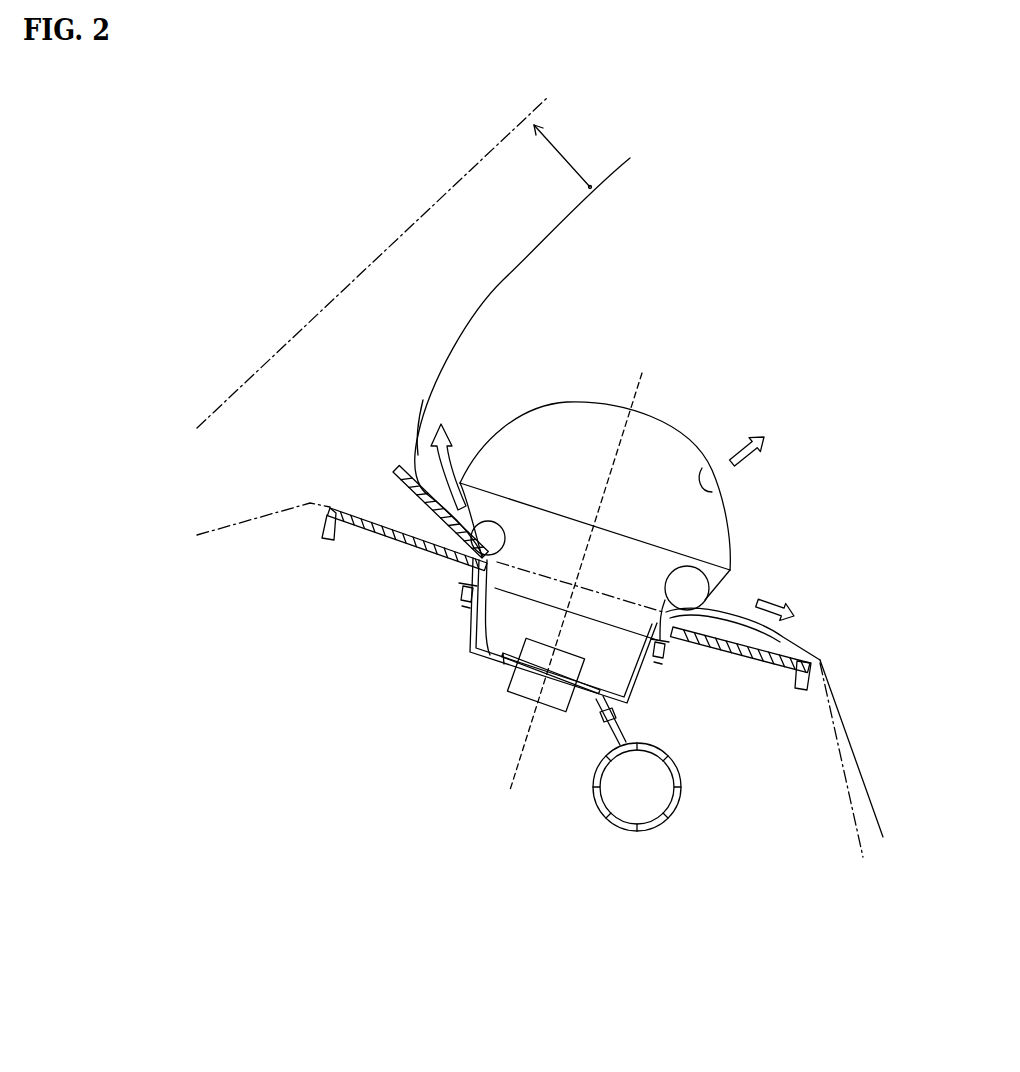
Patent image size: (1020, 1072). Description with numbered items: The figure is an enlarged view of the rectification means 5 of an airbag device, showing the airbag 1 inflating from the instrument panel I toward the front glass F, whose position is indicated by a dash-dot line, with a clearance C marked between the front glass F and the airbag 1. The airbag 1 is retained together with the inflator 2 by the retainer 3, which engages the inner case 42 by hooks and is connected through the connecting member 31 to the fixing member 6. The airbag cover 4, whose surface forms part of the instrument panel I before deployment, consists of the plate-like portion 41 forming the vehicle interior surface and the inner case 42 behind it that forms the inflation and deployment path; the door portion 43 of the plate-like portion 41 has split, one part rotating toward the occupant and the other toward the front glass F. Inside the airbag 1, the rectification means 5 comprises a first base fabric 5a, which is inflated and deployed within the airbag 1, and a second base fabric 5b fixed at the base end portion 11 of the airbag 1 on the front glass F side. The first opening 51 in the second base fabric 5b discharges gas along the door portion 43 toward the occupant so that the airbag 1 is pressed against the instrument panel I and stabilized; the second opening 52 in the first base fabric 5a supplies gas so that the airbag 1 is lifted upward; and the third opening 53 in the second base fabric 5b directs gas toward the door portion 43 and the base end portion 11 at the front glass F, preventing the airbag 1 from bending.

The airbag 1 is at (500, 280).
The base end portion 11 is at (403, 373).
The inflator 2 is at (540, 705).
The retainer 3 is at (473, 660).
The connecting member 31 is at (620, 718).
The airbag cover 4 is at (557, 583).
The plate-like portion 41 is at (385, 538).
The inner case 42 is at (465, 591).
The door portion 43 is at (392, 473).
The rectification means 5 is at (625, 504).
The first base fabric 5a is at (597, 410).
The second base fabric 5b is at (643, 565).
The first opening 51 is at (707, 593).
The second opening 52 is at (718, 478).
The third opening 53 is at (500, 530).
The fixing member 6 is at (637, 832).
The clearance C is at (563, 157).
The front glass F is at (410, 228).
The instrument panel I is at (278, 511).